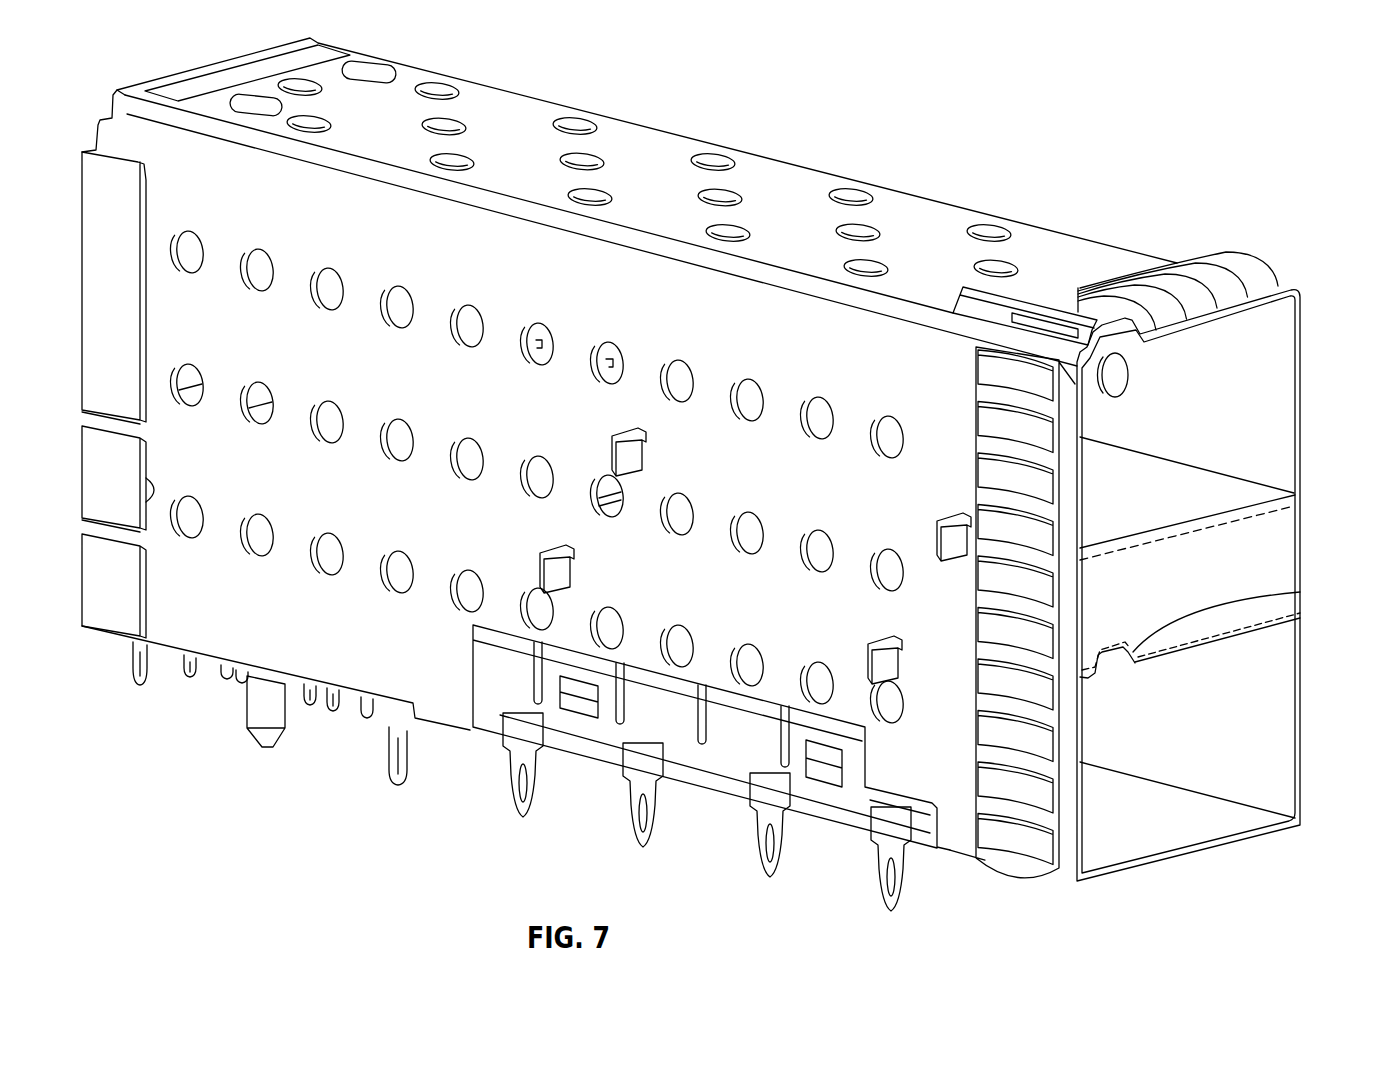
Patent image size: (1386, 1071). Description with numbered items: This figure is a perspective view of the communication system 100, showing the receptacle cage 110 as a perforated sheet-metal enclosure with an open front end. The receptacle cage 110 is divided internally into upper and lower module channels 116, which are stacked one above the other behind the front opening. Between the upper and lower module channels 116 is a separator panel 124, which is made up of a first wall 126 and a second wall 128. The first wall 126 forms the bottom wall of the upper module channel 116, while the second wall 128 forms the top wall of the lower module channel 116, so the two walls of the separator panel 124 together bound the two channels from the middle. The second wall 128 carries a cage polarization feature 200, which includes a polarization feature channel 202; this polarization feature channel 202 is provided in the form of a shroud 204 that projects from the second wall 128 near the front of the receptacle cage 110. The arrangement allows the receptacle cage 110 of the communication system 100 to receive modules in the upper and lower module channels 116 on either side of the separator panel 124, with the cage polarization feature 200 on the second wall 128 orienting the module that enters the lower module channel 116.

The communication system 100 is at (889, 69).
The receptacle cage 110 is at (705, 128).
The cage polarization feature 200 is at (1045, 293).
The upper and lower module channels 116 is at (1258, 384).
The first wall 126 is at (1213, 487).
The separator panel 124 is at (1270, 548).
The shroud 204 is at (1138, 654).
The second wall 128 is at (1243, 640).
The polarization feature channel 202 is at (1094, 656).